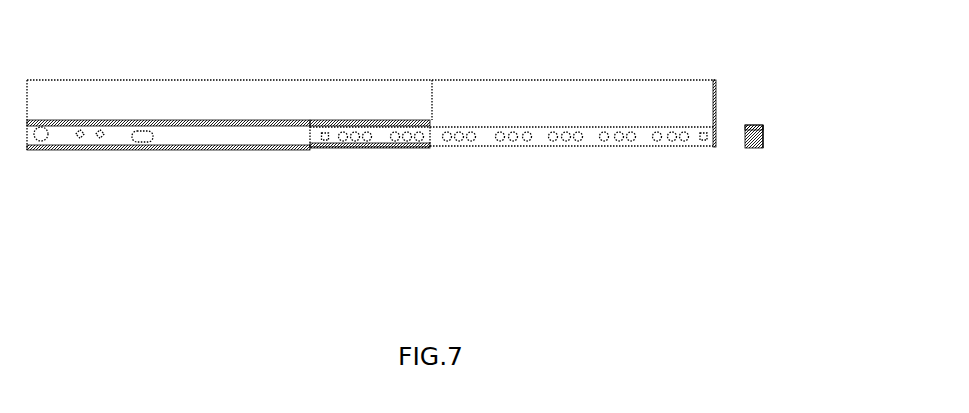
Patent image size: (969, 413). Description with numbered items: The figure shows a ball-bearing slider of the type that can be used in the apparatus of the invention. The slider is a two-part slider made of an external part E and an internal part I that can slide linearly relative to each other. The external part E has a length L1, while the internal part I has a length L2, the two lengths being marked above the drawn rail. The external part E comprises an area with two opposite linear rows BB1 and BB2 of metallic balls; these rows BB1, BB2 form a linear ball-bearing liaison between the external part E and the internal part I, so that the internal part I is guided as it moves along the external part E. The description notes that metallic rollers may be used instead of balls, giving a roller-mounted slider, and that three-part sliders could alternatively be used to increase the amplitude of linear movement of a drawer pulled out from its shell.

The length of the external part L1 is at (229, 97).
The length of the internal part L2 is at (573, 96).
The first linear row of metallic balls BB1 is at (340, 147).
The second linear row of metallic balls BB2 is at (337, 122).
The external part E is at (110, 147).
The internal part I is at (597, 147).